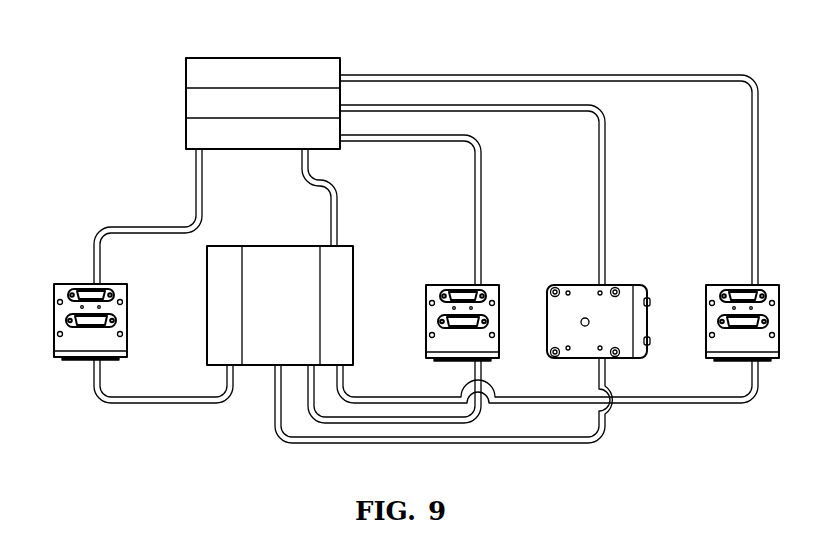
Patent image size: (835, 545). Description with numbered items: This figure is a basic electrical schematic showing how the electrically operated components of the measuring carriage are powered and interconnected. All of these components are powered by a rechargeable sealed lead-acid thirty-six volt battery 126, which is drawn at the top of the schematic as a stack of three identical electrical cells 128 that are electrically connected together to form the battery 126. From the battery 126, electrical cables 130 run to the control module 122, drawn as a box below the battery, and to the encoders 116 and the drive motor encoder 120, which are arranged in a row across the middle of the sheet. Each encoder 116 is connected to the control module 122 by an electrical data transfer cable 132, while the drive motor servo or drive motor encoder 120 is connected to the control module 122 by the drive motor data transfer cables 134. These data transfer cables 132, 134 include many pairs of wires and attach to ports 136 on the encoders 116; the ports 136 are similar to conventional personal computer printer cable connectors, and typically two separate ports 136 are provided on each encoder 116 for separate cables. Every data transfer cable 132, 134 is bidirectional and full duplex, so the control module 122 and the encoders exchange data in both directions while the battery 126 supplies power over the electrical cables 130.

The encoder 116 is at (53, 292).
The drive motor encoder 120 is at (648, 287).
The control module 122 is at (260, 245).
The battery 126 is at (337, 58).
The electrical cells 128 is at (186, 133).
The electrical cables 130 is at (714, 74).
The electrical data transfer cables 132 is at (142, 407).
The drive motor data transfer cables 134 is at (320, 445).
The ports 136 is at (127, 295).